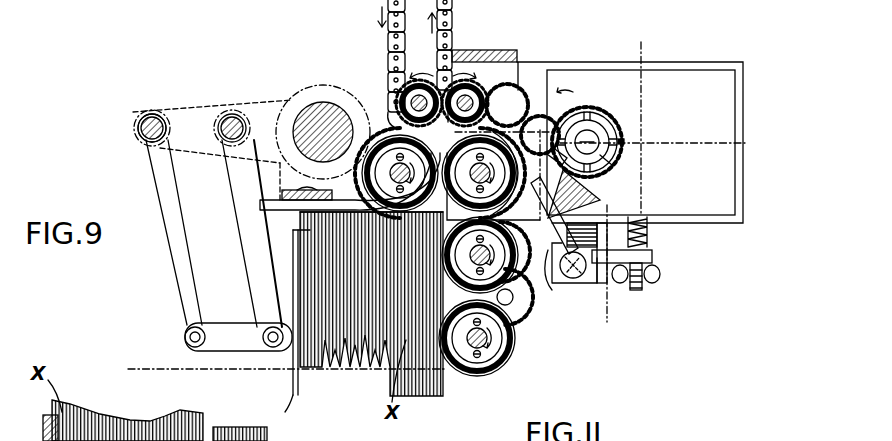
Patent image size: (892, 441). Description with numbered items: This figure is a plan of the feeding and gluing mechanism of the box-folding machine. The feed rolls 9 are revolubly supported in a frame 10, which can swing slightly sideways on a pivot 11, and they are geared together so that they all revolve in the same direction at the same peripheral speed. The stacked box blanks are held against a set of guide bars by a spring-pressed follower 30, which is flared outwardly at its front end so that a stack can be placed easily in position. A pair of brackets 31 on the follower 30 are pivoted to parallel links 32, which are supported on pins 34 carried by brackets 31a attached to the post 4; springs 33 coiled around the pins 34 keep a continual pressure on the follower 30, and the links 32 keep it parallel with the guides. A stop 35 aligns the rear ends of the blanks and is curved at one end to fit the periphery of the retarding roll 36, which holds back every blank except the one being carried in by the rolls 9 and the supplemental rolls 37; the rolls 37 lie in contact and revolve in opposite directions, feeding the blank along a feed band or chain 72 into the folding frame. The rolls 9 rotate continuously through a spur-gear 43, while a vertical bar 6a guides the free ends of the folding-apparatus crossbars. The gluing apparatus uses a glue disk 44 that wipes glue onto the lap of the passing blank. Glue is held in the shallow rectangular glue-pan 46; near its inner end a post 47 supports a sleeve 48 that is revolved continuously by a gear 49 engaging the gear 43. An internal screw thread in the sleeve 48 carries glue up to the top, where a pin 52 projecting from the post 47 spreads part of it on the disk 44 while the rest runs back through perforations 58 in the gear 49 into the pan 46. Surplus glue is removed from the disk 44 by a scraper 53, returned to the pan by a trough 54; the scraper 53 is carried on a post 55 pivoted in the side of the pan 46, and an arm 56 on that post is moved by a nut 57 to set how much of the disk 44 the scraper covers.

The post 4 is at (320, 105).
The vertical bar 6a is at (490, 50).
The rolls 9 is at (493, 143).
The frame 10 is at (436, 255).
The pivot 11 is at (623, 184).
The follower 30 is at (298, 398).
The brackets 31 is at (238, 337).
The brackets 31a is at (264, 97).
The parallel links 32 is at (180, 252).
The springs 33 is at (232, 116).
The pins 34 is at (158, 122).
The stop 35 is at (264, 203).
The retarding roll 36 is at (390, 125).
The supplemental rolls 37 is at (420, 78).
The spur-gear 43 is at (552, 118).
The glue disk 44 is at (530, 88).
The glue-pan 46 is at (712, 68).
The post 47 is at (622, 118).
The sleeve 48 is at (606, 155).
The gear 49 is at (626, 147).
The pin 52 is at (590, 132).
The scraper 53 is at (565, 279).
The trough 54 is at (601, 203).
The post 55 is at (599, 288).
The arm 56 is at (652, 254).
The nut 57 is at (660, 280).
The perforations 58 is at (632, 133).
The feed band or chain 72 is at (390, 50).